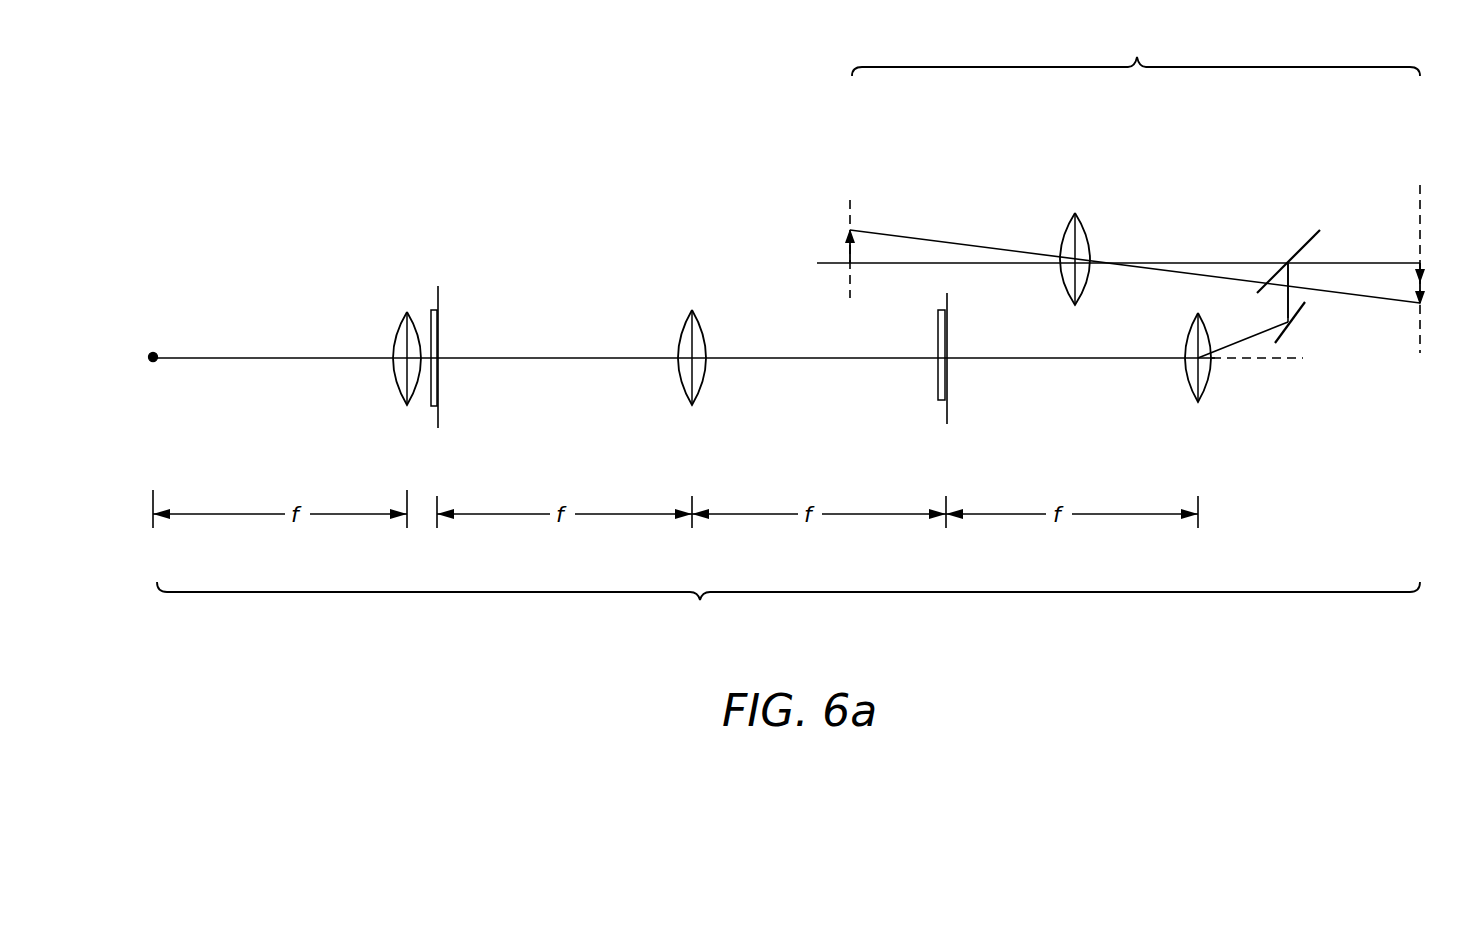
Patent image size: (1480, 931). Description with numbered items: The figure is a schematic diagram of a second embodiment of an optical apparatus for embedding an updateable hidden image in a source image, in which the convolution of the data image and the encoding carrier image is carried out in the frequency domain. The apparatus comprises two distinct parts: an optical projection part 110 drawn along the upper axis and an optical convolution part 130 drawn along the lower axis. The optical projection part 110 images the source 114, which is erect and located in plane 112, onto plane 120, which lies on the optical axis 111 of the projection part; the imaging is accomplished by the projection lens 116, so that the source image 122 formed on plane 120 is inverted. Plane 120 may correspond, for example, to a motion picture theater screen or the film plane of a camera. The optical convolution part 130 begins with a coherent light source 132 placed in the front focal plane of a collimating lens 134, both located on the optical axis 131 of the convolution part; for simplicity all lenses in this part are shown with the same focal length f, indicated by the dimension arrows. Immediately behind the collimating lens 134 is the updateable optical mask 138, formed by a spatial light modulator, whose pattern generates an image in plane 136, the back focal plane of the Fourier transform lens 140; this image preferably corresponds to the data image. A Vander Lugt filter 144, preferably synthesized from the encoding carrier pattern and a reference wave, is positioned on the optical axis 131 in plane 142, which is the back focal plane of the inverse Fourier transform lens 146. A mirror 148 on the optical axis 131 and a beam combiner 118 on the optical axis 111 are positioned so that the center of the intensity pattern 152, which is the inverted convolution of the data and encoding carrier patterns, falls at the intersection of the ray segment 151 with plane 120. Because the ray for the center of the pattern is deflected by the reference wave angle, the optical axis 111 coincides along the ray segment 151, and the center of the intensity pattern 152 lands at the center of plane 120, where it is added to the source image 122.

The optical projection part 110 is at (1136, 49).
The optical axis of the projection part 111 is at (920, 266).
The plane 112 is at (852, 218).
The source 114 is at (848, 250).
The projection lens 116 is at (1088, 245).
The beam combiner 118 is at (1307, 236).
The plane 120 is at (1418, 354).
The source image 122 is at (1421, 296).
The optical convolution part 130 is at (788, 606).
The optical axis of the convolution part 131 is at (524, 357).
The coherent light source 132 is at (155, 356).
The collimating lens 134 is at (395, 342).
The plane 136 is at (440, 420).
The updateable optical mask 138 is at (432, 311).
The Fourier transform lens 140 is at (704, 342).
The plane 142 is at (948, 416).
The Vander Lugt filter 144 is at (938, 388).
The inverse Fourier transform lens 146 is at (1190, 386).
The mirror 148 is at (1300, 324).
The ray segment 151 is at (1367, 262).
The intensity pattern 152 is at (1421, 270).